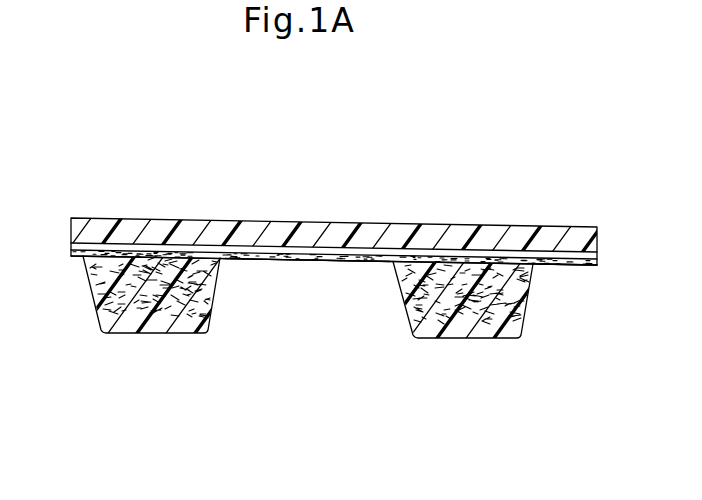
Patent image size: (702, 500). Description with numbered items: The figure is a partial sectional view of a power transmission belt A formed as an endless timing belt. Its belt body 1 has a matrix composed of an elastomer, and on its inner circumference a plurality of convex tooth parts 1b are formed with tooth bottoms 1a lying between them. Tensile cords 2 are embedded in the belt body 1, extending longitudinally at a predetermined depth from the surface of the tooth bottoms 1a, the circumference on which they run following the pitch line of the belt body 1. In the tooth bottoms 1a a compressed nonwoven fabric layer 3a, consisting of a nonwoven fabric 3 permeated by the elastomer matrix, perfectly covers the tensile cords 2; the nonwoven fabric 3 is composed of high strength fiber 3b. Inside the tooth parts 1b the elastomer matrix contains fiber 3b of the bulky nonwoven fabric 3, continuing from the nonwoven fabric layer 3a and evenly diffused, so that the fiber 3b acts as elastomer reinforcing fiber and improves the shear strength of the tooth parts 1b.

The power transmission belt A is at (82, 173).
The belt body 1 is at (140, 218).
The tooth bottoms 1a is at (280, 265).
The tooth parts 1b is at (170, 334).
The tensile cords 2 is at (343, 221).
The nonwoven fabric 3 is at (288, 134).
The compressed nonwoven fabric layer 3a is at (185, 262).
The high strength fiber 3b is at (255, 250).